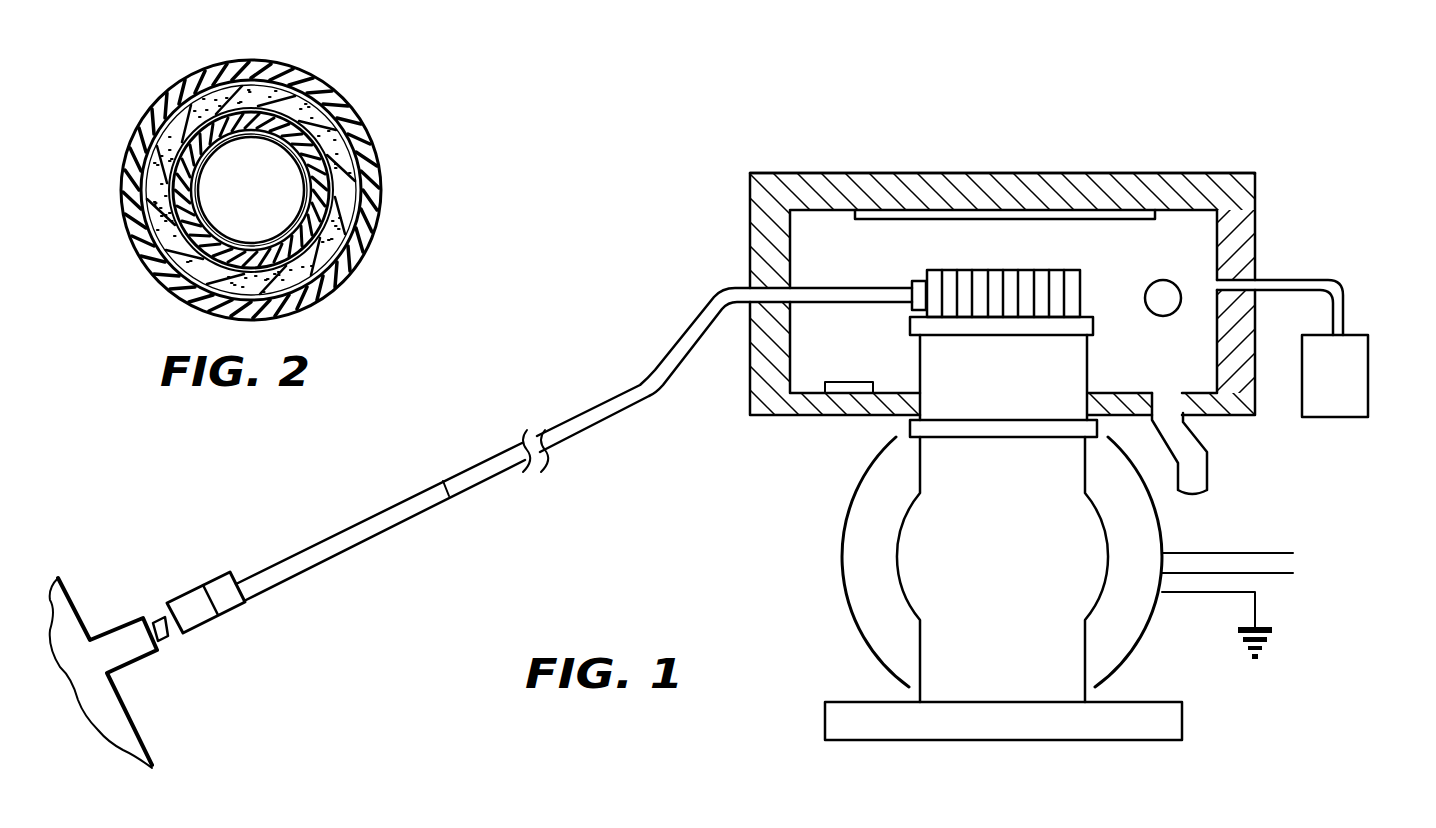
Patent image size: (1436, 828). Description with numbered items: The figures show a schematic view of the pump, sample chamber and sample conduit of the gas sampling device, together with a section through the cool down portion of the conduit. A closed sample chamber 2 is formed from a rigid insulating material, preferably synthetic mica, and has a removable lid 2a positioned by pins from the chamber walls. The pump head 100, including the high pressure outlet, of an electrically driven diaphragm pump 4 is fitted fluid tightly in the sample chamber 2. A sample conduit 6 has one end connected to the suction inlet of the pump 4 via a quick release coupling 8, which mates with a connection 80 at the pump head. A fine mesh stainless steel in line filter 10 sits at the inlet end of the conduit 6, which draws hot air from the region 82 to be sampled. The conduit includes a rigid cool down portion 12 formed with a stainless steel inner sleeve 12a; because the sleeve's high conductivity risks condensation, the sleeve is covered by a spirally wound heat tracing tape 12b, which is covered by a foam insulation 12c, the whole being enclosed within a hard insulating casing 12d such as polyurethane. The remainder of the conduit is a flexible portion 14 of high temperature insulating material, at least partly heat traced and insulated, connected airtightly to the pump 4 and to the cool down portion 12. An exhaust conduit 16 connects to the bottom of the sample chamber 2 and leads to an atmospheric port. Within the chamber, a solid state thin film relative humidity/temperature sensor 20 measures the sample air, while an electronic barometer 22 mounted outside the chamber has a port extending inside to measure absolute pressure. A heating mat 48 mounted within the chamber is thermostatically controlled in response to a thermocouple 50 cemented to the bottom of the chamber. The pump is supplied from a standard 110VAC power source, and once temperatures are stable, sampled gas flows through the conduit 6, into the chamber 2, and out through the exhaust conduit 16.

In FIG. 1, the sample chamber 2 is at (1258, 233).
In FIG. 1, the lid 2a is at (1196, 173).
In FIG. 1, the diaphragm pump 4 is at (1012, 596).
In FIG. 1, the sample conduit 6 is at (556, 398).
In FIG. 1, the quick release coupling 8 is at (896, 300).
In FIG. 1, the in line filter 10 is at (212, 573).
In FIG. 1, the cool down portion 12 is at (370, 515).
In FIG. 2, the stainless steel inner sleeve 12a is at (300, 186).
In FIG. 2, the heat tracing tape 12b is at (173, 213).
In FIG. 2, the foam insulation 12c is at (132, 178).
In FIG. 2, the hard insulating casing 12d is at (166, 88).
In FIG. 1, the flexible portion 14 is at (666, 350).
In FIG. 1, the exhaust conduit 16 is at (1208, 460).
In FIG. 1, the relative humidity/temperature sensor 20 is at (1168, 284).
In FIG. 1, the electronic barometer 22 is at (1358, 334).
In FIG. 1, the heating mat 48 is at (1032, 216).
In FIG. 1, the thermocouple 50 is at (849, 382).
In FIG. 1, the mating connection 80 is at (914, 280).
In FIG. 1, the region to be sampled 82 is at (73, 602).
In FIG. 1, the pump head 100 is at (1101, 324).
In FIG. 1, the power supply 110VAC is at (1273, 603).